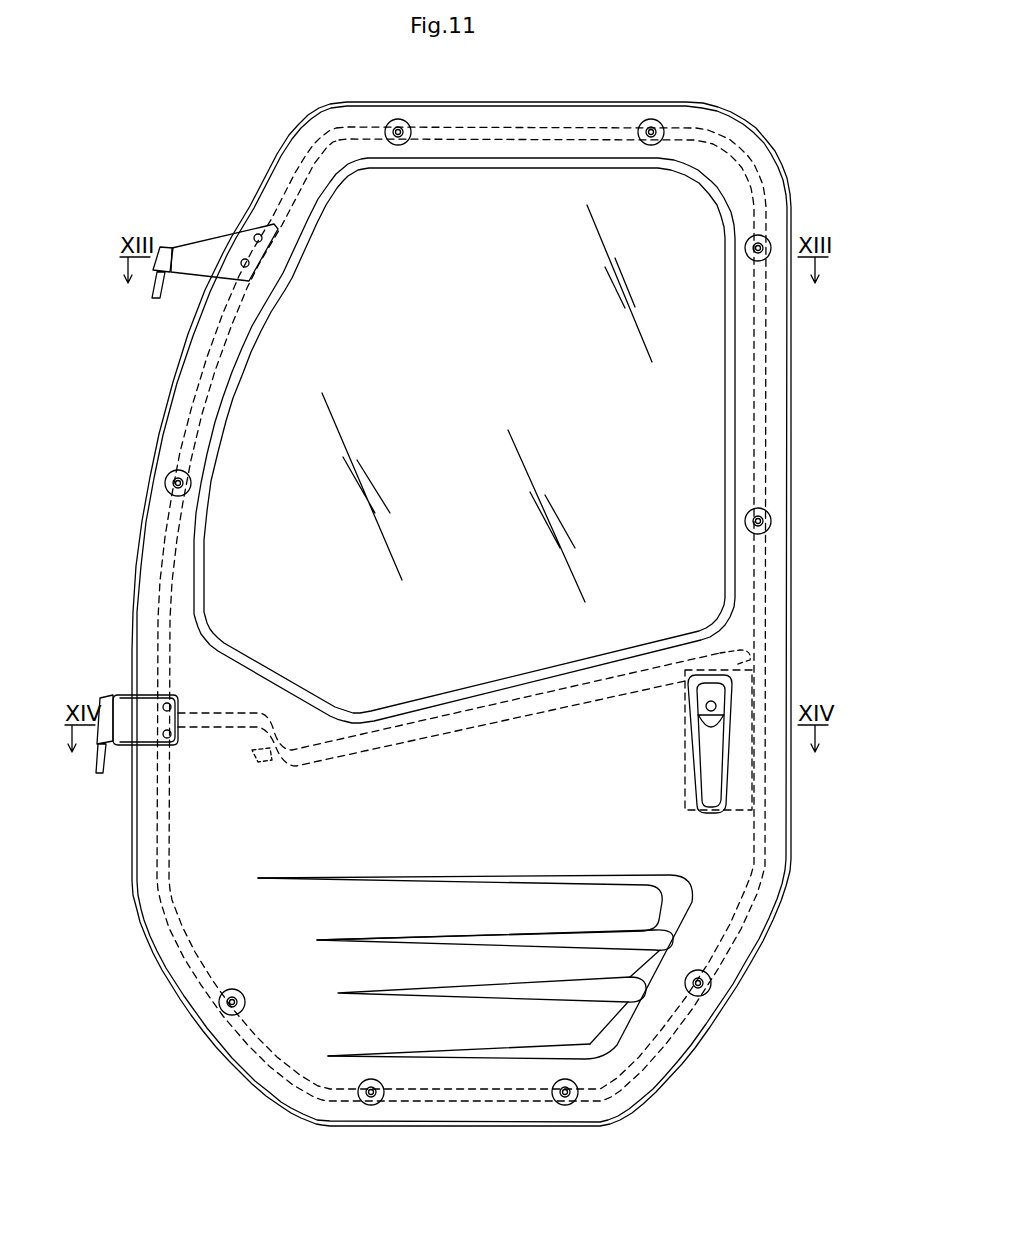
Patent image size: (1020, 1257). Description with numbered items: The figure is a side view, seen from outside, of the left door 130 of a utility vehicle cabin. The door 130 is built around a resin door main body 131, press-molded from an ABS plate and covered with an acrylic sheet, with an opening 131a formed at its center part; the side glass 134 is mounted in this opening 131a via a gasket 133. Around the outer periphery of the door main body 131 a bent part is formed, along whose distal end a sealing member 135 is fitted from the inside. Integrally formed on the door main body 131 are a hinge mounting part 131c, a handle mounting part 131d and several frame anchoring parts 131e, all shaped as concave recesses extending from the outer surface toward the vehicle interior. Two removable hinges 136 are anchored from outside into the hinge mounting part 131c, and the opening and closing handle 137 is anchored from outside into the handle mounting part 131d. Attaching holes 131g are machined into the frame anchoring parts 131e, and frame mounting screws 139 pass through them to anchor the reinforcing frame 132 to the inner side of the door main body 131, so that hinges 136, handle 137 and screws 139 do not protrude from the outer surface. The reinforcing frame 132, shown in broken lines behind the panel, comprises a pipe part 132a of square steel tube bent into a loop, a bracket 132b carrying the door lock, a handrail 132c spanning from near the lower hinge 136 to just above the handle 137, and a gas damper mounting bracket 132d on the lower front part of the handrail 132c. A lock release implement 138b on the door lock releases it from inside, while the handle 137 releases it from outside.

The door 130 is at (232, 142).
The door main body 131 is at (195, 862).
The opening 131a is at (528, 215).
The hinge mounting part 131c is at (242, 278).
The handle mounting part 131d is at (690, 712).
The frame anchoring parts 131e is at (390, 127).
The attaching holes 131g is at (652, 118).
The reinforcing frame 132 is at (735, 150).
The pipe part 132a is at (160, 955).
The bracket 132b is at (685, 790).
The handrail 132c is at (450, 728).
The gas damper mounting bracket 132d is at (262, 782).
The gasket 133 is at (225, 408).
The side glass 134 is at (464, 388).
The sealing member 135 is at (141, 520).
The hinges 136 is at (208, 245).
The opening and closing handle 137 is at (700, 760).
The lock release implement 138b is at (722, 640).
The frame mounting screws 139 is at (498, 612).